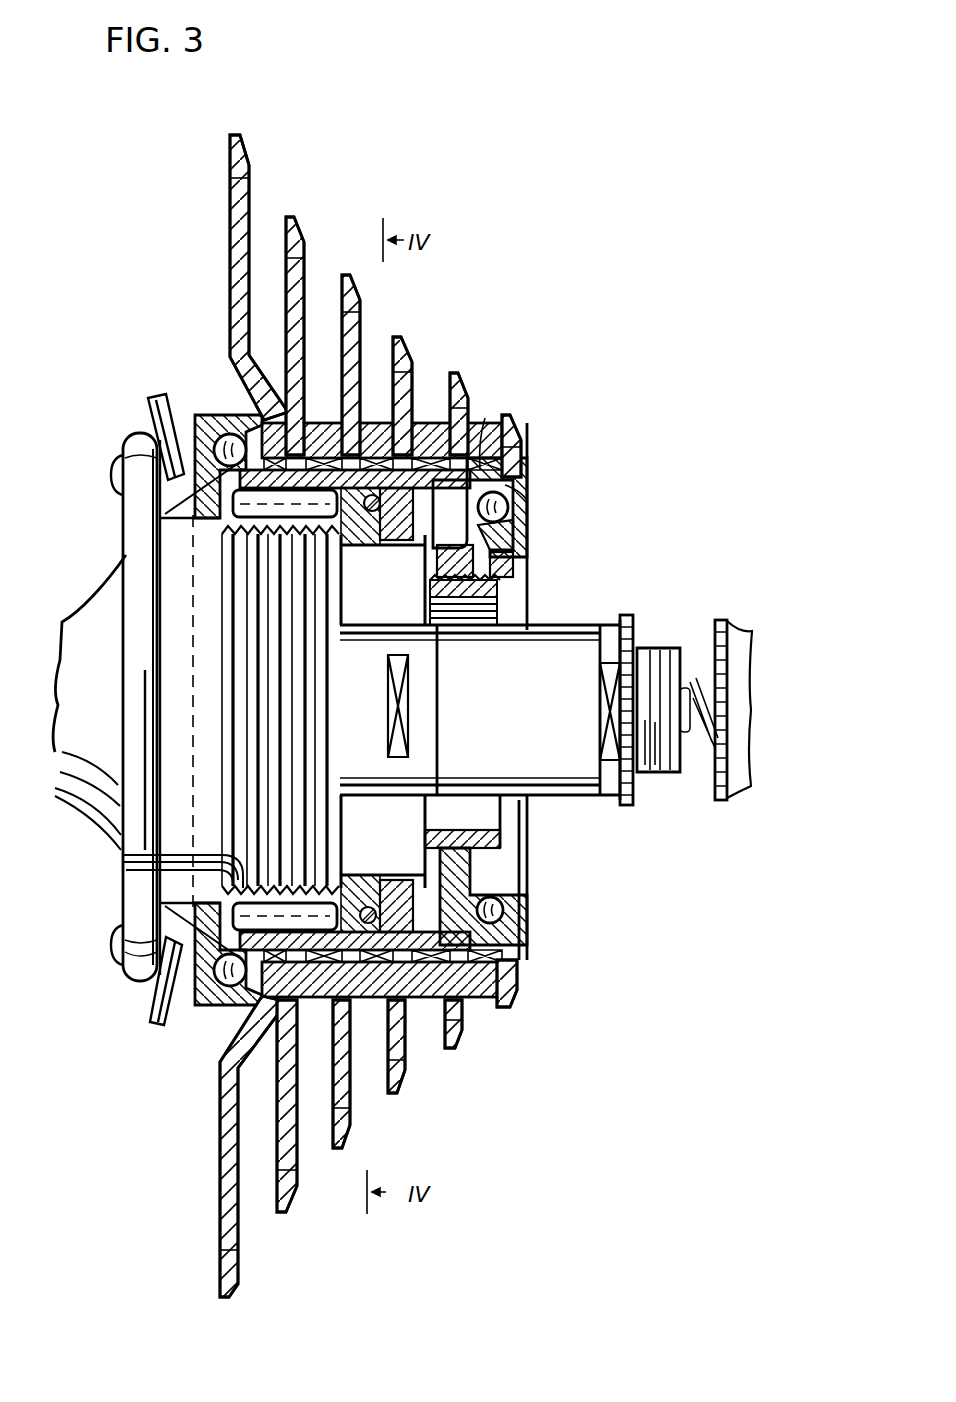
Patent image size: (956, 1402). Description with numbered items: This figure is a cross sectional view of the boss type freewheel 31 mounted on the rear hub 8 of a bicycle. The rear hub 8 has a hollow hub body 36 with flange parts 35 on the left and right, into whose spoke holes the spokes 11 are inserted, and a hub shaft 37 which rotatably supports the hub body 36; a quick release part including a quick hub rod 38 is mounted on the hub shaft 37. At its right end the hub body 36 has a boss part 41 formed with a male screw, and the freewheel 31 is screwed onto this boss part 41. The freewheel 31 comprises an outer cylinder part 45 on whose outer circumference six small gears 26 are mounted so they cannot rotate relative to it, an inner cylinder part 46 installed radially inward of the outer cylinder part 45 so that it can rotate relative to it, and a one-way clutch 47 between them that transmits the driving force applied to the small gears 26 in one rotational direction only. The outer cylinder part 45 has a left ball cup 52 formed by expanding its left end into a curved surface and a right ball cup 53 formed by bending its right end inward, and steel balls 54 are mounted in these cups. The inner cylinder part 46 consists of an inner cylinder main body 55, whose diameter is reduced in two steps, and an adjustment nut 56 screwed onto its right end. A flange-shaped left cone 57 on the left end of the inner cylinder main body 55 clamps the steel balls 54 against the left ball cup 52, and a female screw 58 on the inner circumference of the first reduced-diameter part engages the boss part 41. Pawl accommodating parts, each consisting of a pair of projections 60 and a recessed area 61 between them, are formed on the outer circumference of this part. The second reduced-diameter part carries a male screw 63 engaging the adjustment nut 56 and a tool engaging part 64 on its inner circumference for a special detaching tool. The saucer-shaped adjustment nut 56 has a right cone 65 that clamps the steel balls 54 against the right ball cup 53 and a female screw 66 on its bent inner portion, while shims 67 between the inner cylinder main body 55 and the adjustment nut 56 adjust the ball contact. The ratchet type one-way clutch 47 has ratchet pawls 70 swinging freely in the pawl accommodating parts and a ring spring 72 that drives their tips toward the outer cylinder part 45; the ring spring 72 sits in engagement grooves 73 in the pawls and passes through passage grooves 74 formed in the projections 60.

The rear hub 8 is at (65, 606).
The spokes 11 is at (156, 402).
The small gears 26 is at (243, 160).
The freewheel 31 is at (518, 350).
The flange parts 35 is at (136, 437).
The hub body 36 is at (107, 620).
The hub shaft 37 is at (568, 656).
The quick hub rod 38 is at (690, 652).
The boss part 41 is at (218, 983).
The outer cylinder part 45 is at (425, 966).
The inner cylinder part 46 is at (326, 966).
The one-way clutch 47 is at (372, 966).
The left ball cup 52 is at (257, 428).
The right ball cup 53 is at (480, 490).
The steel balls 54 is at (236, 426).
The inner cylinder main body 55 is at (160, 914).
The adjustment nut 56 is at (503, 893).
The left cone 57 is at (157, 490).
The female screw 58 is at (122, 856).
The projections 60 is at (350, 500).
The recessed area 61 is at (362, 505).
The male screw 63 is at (512, 565).
The tool engaging part 64 is at (500, 836).
The right cone 65 is at (522, 523).
The female screw 66 is at (502, 590).
The shims 67 is at (503, 914).
The ratchet pawls 70 is at (400, 512).
The ring spring 72 is at (368, 906).
The engagement grooves 73 is at (372, 512).
The passage grooves 74 is at (338, 966).